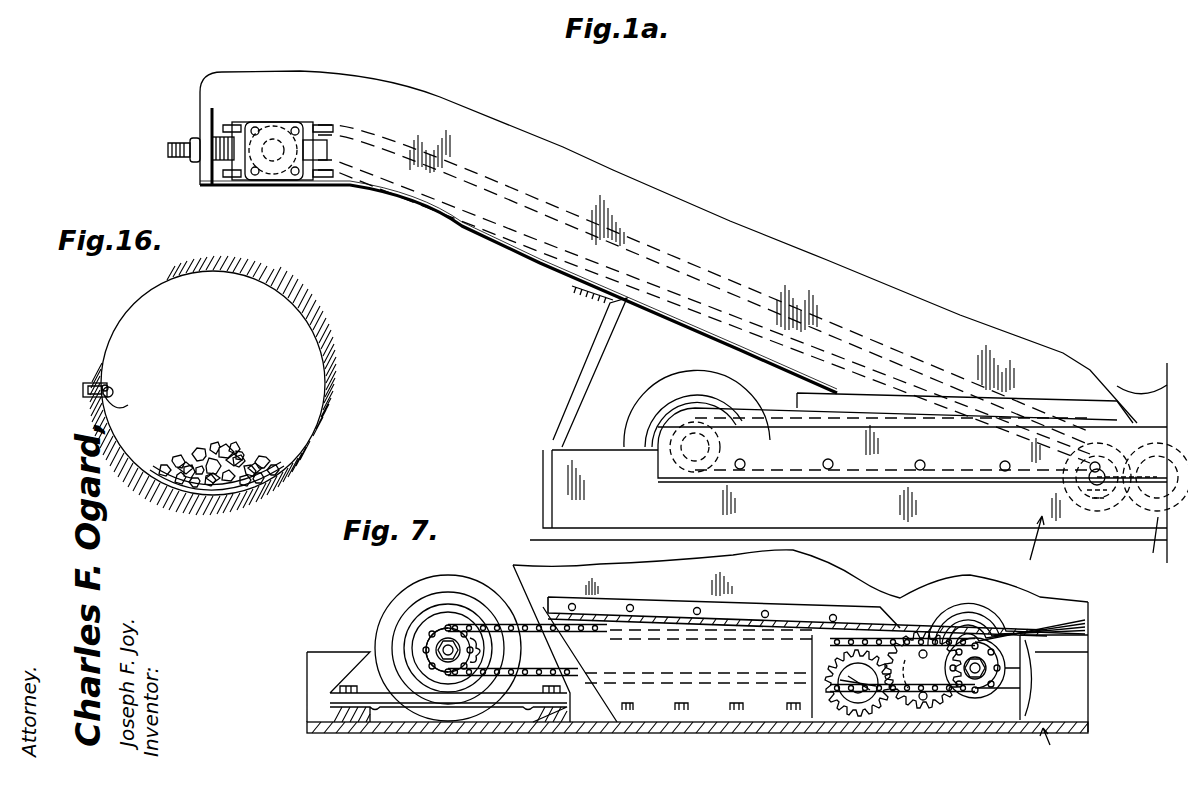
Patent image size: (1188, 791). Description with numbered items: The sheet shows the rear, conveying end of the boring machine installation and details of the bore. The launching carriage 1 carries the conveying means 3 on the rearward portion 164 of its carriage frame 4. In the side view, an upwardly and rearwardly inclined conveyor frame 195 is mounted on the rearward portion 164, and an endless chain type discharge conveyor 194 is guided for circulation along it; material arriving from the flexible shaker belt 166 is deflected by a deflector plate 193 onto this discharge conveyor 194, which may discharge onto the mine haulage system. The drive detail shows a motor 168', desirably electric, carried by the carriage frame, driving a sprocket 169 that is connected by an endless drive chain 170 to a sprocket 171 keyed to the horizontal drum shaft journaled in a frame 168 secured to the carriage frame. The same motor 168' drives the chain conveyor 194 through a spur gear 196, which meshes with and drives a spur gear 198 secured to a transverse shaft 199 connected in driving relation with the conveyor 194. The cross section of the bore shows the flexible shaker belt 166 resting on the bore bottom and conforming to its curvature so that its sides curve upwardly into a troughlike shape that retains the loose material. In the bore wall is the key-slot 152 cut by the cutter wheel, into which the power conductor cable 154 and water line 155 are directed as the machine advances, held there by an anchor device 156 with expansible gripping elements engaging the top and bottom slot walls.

In FIG. 1a, the launching carriage 1 is at (1032, 544).
In FIG. 7, the launching carriage 1 is at (1051, 746).
In FIG. 1a, the conveying means 3 is at (1071, 579).
In FIG. 7, the conveying means 3 is at (1028, 609).
In FIG. 1a, the carriage frame 4 is at (1151, 549).
In FIG. 16, the key-slot 152 is at (88, 398).
In FIG. 16, the power conductor cable 154 is at (107, 385).
In FIG. 16, the water line 155 is at (106, 396).
In FIG. 16, the anchor device 156 is at (111, 391).
In FIG. 1a, the rearward portion of the carriage frame 164 is at (972, 505).
In FIG. 7, the rearward portion of the carriage frame 164 is at (490, 727).
In FIG. 16, the flexible shaker belt 166 is at (226, 500).
In FIG. 7, the flexible shaker belt 166 is at (1080, 624).
In FIG. 1a, the frame 168 is at (697, 388).
In FIG. 7, the motor 168' is at (448, 630).
In FIG. 7, the sprocket 169 is at (465, 663).
In FIG. 1a, the endless drive chain 170 is at (786, 468).
In FIG. 7, the endless drive chain 170 is at (596, 638).
In FIG. 7, the sprocket 171 is at (1028, 690).
In FIG. 1a, the deflector plate 193 is at (1106, 445).
In FIG. 1a, the endless chain type discharge conveyor 194 is at (828, 332).
In FIG. 1a, the conveyor frame 195 is at (503, 177).
In FIG. 7, the spur gear 196 is at (942, 700).
In FIG. 1a, the spur gear 198 is at (1116, 507).
In FIG. 7, the spur gear 198 is at (861, 704).
In FIG. 1a, the transverse shaft 199 is at (1105, 490).
In FIG. 7, the transverse shaft 199 is at (858, 676).